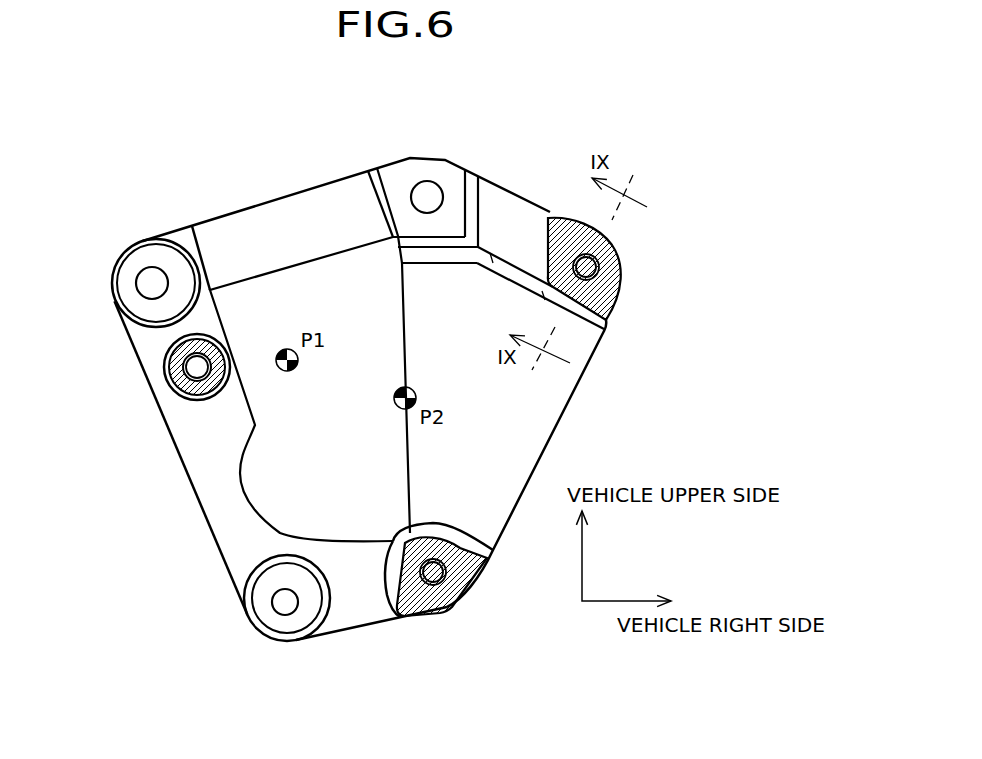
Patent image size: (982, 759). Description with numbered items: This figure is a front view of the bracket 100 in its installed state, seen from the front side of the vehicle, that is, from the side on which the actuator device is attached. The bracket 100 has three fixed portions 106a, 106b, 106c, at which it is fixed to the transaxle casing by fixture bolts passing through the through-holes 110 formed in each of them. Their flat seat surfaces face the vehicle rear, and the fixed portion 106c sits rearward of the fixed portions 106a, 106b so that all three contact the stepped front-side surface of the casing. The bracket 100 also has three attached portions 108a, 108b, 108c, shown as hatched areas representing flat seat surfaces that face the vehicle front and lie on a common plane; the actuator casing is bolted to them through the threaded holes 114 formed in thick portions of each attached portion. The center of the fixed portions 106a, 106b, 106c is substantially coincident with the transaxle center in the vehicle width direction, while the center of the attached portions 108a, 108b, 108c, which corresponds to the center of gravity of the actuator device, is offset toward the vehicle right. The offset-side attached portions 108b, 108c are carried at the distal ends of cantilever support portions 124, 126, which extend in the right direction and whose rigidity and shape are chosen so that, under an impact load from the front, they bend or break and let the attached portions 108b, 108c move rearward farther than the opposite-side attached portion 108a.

The bracket 100 is at (232, 181).
The fixed portion 106a is at (133, 244).
The fixed portion 106b is at (244, 618).
The fixed portion 106c is at (392, 157).
The attached portion 108a is at (173, 358).
The attached portion 108b is at (450, 608).
The attached portion 108c is at (557, 217).
The through-hole 110 is at (147, 283).
The threaded hole 114 is at (173, 396).
The cantilever support portion 124 is at (360, 602).
The cantilever support portion 126 is at (507, 212).